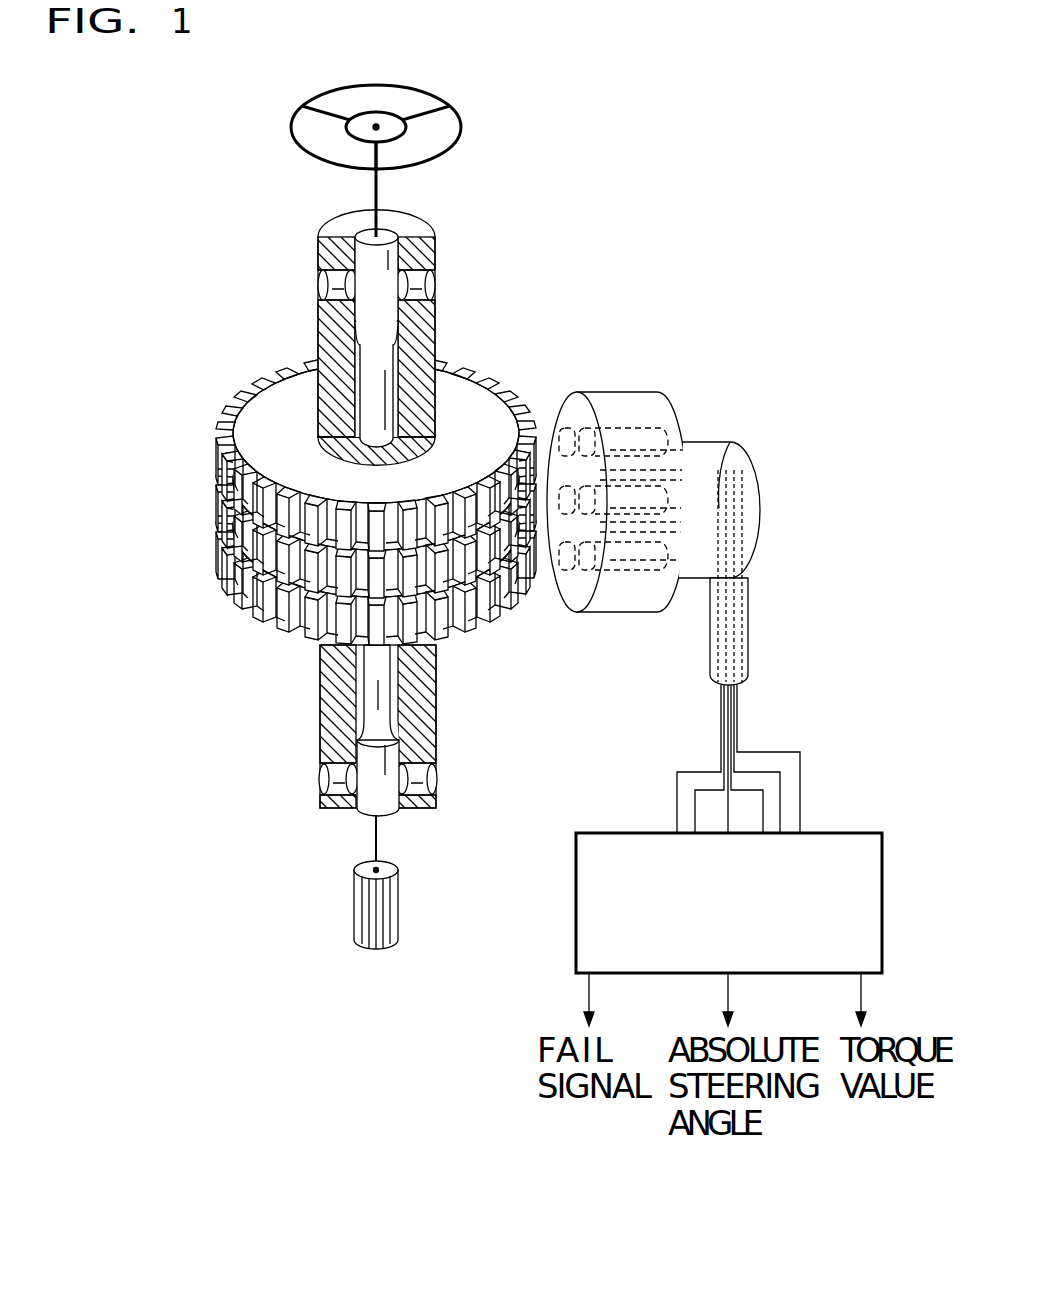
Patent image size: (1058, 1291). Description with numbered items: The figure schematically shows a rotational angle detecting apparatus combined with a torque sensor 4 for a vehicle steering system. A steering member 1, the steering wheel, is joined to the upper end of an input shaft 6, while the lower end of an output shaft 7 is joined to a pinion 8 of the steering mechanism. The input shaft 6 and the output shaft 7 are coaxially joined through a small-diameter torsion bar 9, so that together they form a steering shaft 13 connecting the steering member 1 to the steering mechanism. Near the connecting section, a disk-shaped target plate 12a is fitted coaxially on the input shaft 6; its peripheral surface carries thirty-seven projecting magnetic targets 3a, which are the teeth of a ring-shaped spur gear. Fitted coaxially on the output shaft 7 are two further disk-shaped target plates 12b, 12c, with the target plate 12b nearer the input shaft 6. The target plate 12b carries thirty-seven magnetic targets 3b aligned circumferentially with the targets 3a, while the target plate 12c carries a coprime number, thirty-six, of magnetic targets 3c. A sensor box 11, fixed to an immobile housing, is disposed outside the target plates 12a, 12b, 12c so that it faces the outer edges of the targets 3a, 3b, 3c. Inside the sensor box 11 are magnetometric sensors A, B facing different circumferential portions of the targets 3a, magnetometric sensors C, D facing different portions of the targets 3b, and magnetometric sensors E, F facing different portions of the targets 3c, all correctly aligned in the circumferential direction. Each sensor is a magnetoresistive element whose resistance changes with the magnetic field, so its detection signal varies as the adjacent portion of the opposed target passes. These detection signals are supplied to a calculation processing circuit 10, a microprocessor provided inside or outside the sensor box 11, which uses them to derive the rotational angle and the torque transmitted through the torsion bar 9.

The steering member 1 is at (460, 119).
The targets 3a is at (215, 430).
The targets 3b is at (215, 532).
The targets 3c is at (265, 618).
The torque sensor 4 is at (683, 163).
The input shaft 6 is at (435, 318).
The output shaft 7 is at (322, 730).
The pinion 8 is at (354, 900).
The torsion bar 9 is at (370, 355).
The calculation processing circuit 10 is at (576, 906).
The sensor box 11 is at (665, 412).
The target plate 12a is at (262, 410).
The target plate 12b is at (222, 476).
The target plate 12c is at (218, 568).
The steering shaft 13 is at (402, 321).
The magnetometric sensor A is at (558, 430).
The magnetometric sensor B is at (583, 413).
The magnetometric sensor C is at (740, 478).
The magnetometric sensor D is at (740, 503).
The magnetometric sensor E is at (740, 530).
The magnetometric sensor F is at (742, 558).